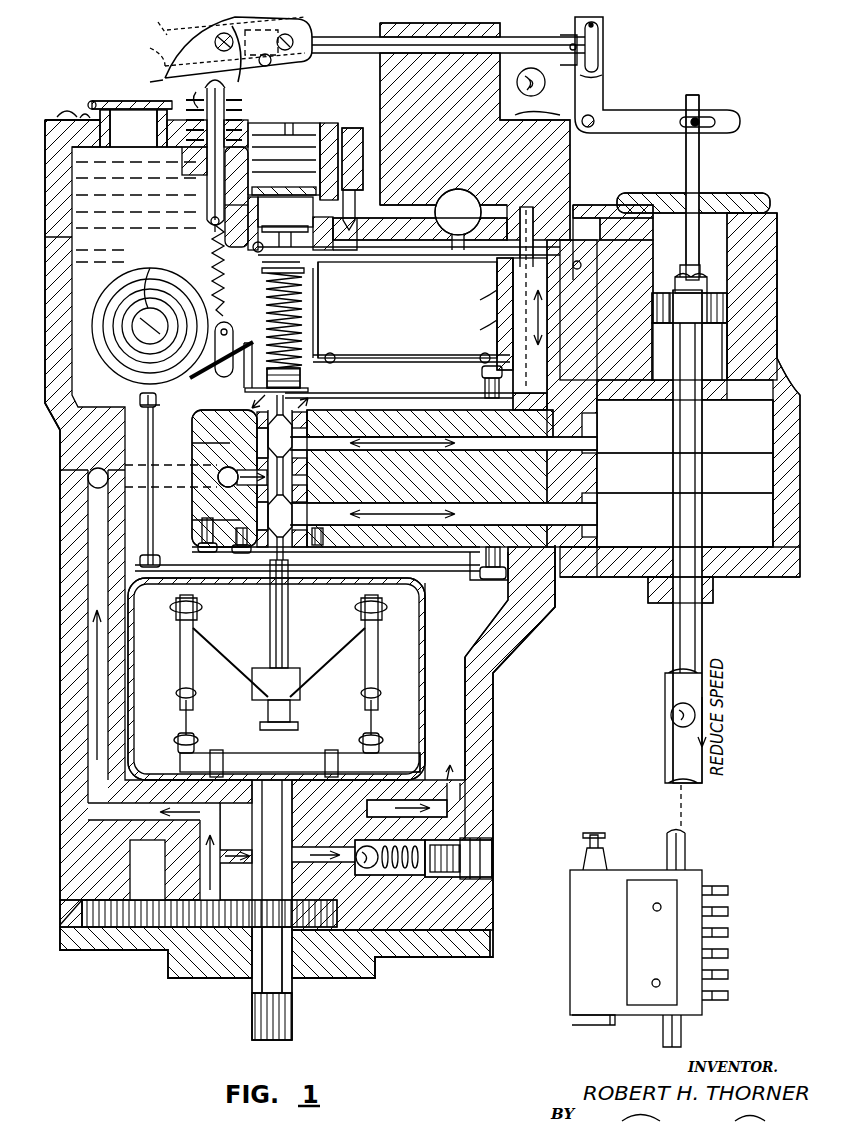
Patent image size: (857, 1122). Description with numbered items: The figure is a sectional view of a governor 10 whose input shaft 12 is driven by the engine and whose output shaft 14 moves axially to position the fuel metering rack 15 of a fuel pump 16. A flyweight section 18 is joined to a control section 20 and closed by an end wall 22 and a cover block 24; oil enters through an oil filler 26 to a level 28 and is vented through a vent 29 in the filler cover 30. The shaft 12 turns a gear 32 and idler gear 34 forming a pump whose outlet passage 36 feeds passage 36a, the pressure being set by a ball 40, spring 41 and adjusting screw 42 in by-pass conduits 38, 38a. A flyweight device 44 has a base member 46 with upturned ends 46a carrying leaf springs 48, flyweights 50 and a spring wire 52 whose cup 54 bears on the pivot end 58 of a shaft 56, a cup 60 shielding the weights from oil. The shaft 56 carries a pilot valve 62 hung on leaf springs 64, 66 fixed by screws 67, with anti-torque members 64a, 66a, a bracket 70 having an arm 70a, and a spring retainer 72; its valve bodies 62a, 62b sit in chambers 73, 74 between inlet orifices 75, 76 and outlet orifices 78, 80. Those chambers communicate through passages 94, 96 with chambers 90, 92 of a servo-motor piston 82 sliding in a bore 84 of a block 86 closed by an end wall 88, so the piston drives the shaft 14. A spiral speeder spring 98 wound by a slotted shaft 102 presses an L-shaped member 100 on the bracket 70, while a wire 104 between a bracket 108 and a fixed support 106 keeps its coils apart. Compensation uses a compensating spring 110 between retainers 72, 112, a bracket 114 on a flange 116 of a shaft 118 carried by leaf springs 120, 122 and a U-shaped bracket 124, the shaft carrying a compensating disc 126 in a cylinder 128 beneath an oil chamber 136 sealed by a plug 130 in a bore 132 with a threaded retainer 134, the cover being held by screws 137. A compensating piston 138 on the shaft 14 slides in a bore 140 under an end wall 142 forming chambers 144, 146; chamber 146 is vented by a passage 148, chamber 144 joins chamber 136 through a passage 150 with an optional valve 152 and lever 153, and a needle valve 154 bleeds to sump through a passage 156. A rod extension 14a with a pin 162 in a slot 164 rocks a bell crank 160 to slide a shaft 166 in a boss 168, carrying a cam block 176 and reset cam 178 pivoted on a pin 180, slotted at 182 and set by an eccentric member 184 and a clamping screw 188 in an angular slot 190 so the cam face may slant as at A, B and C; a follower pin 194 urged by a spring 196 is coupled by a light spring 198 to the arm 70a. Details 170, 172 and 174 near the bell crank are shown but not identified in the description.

The governor 10 is at (82, 977).
The input shaft 12 is at (292, 1025).
The output shaft 14 is at (702, 374).
The rod extension 14a is at (700, 152).
The fuel metering rack 15 is at (690, 855).
The fuel pump 16 is at (620, 1037).
The flyweight section 18 is at (495, 730).
The control section 20 is at (58, 445).
The end wall 22 is at (415, 960).
The cover block 24 is at (50, 118).
The oil filler 26 is at (91, 100).
The oil level 28 is at (84, 115).
The vent 29 is at (125, 100).
The oil filler cover 30 is at (133, 128).
The gear 32 is at (310, 920).
The idler gear 34 is at (150, 915).
The outlet passage 36 is at (95, 780).
The passage 36a is at (238, 470).
The by-pass conduit 38 is at (318, 865).
The by-pass conduit 38a is at (450, 810).
The ball 40 is at (365, 870).
The spring 41 is at (398, 875).
The adjusting screw 42 is at (450, 880).
The centrifugal flyweight device 44 is at (428, 663).
The base member 46 is at (245, 760).
The upturned ends 46a is at (195, 738).
The leaf springs 48 is at (180, 718).
The flyweights 50 is at (180, 645).
The spring wire 52 is at (228, 665).
The force transmitting cup 54 is at (292, 680).
The shaft 56 is at (288, 630).
The pivot end 58 is at (268, 672).
The cup 60 is at (425, 715).
The pilot valve 62 is at (300, 475).
The valve body member 62a is at (257, 510).
The valve body member 62b is at (257, 440).
The leaf spring 64 is at (440, 575).
The anti-torque member 64a is at (475, 585).
The leaf spring 66 is at (365, 394).
The anti-torque member 66a is at (518, 402).
The screws 67 is at (482, 386).
The bracket 70 is at (244, 386).
The arm 70a is at (212, 372).
The spring retainer 72 is at (300, 378).
The chamber 73 is at (240, 520).
The chamber 74 is at (230, 443).
The fluid inlet orifice 75 is at (296, 500).
The fluid inlet orifice 76 is at (296, 455).
The fluid outlet orifice 78 is at (296, 512).
The fluid outlet orifice 80 is at (318, 425).
The servo-motor piston 82 is at (770, 470).
The bore 84 is at (780, 530).
The block 86 is at (800, 480).
The end wall 88 is at (745, 580).
The fluid chamber 90 is at (685, 520).
The fluid chamber 92 is at (685, 426).
The passage 94 is at (475, 510).
The passage 96 is at (470, 452).
The speeder spring 98 is at (102, 292).
The L-shaped member 100 is at (232, 328).
The slotted shaft 102 is at (150, 270).
The wire 104 is at (148, 436).
The fixed support 106 is at (175, 558).
The bracket 108 is at (138, 400).
The compensating spring 110 is at (303, 320).
The retainer 112 is at (226, 292).
The bracket 114 is at (318, 290).
The flange 116 is at (300, 262).
The shaft 118 is at (265, 270).
The leaf spring 120 is at (380, 358).
The leaf spring 122 is at (407, 310).
The U-shaped bracket 124 is at (497, 292).
The compensating disc 126 is at (240, 210).
The cylinder 128 is at (209, 224).
The sealing plug 130 is at (363, 160).
The bore 132 is at (212, 180).
The threaded retainer 134 is at (285, 122).
The oil chamber 136 is at (285, 222).
The cover screws 137 is at (535, 110).
The compensating piston 138 is at (740, 305).
The bore 140 is at (730, 213).
The end wall 142 is at (637, 195).
The oil chamber 144 is at (740, 340).
The oil chamber 146 is at (780, 228).
The passage 148 is at (590, 220).
The passage 150 is at (518, 192).
The valve 152 is at (452, 192).
The lever 153 is at (540, 72).
The needle compensating valve 154 is at (358, 200).
The passage 156 is at (368, 230).
The bell crank 160 is at (625, 110).
The pin 162 is at (700, 118).
The slot 164 is at (725, 122).
The shaft 166 is at (520, 38).
The boss 168 is at (380, 100).
The slot end 170 is at (600, 28).
The slot 172 is at (603, 50).
The slot end 174 is at (603, 72).
The cam block 176 is at (310, 32).
The reset cam 178 is at (216, 22).
The pin 180 is at (265, 66).
The slot 182 is at (288, 52).
The eccentric adjusting member 184 is at (300, 60).
The clamping screw 188 is at (239, 78).
The angular slot 190 is at (234, 112).
The cam follower pin 194 is at (190, 170).
The spring 196 is at (196, 96).
The light spring 198 is at (212, 278).
The cam position A is at (149, 82).
The cam position B is at (221, 49).
The cam position C is at (224, 20).